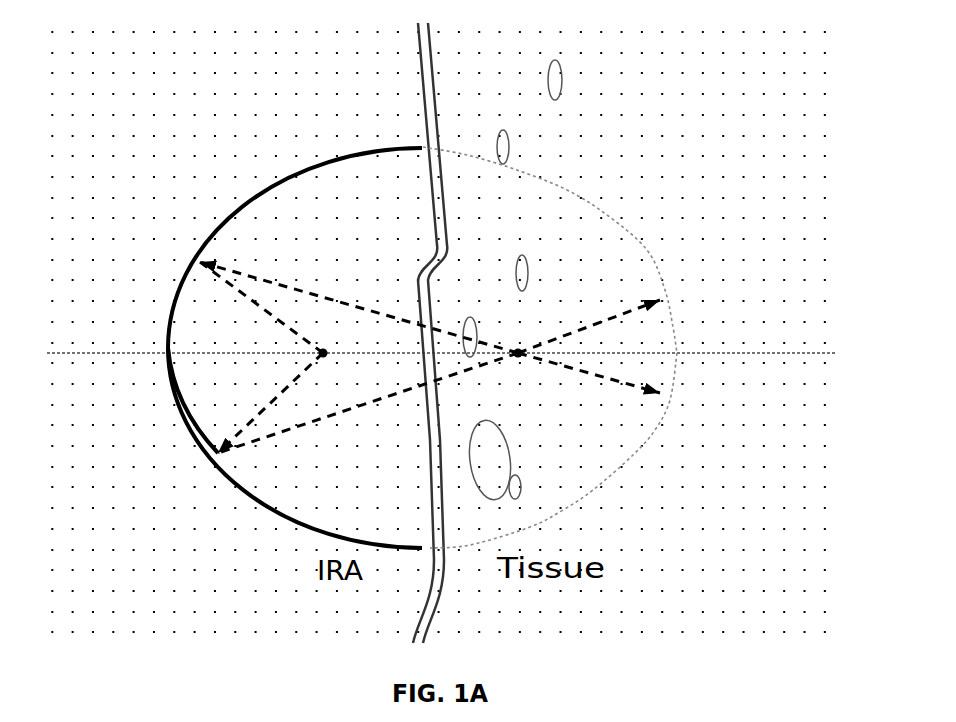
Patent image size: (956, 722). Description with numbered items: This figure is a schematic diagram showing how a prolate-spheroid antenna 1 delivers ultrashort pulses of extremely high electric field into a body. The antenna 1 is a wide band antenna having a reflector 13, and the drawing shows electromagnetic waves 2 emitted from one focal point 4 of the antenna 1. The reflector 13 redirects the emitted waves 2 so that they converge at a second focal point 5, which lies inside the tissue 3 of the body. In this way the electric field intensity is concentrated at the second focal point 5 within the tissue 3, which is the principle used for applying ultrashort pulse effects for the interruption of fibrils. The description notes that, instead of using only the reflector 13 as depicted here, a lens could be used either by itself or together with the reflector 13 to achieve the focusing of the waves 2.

The prolate-spheroid antenna 1 is at (292, 141).
The electromagnetic waves 2 is at (593, 317).
The tissue 3 is at (593, 483).
The first focal point 4 is at (318, 346).
The second focal point 5 is at (518, 353).
The reflector 13 is at (180, 407).